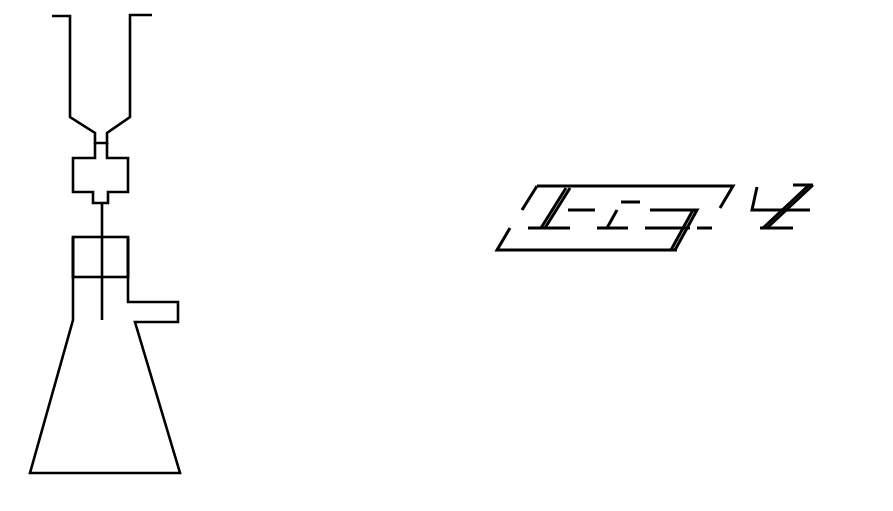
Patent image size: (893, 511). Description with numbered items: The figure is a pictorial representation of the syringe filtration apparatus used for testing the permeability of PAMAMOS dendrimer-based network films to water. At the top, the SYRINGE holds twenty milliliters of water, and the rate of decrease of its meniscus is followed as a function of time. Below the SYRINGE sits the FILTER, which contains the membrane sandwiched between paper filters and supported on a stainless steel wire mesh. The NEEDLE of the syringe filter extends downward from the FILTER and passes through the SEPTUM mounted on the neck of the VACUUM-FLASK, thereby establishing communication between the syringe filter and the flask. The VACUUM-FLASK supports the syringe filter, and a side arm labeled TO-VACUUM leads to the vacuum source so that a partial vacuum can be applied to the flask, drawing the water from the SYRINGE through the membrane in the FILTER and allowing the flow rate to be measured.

The syringe SYRINGE is at (113, 62).
The filter FILTER is at (116, 177).
The needle NEEDLE is at (116, 219).
The septum SEPTUM is at (121, 257).
The vacuum connection TO-VACUUM is at (160, 312).
The vacuum flask VACUUM-FLASK is at (121, 392).